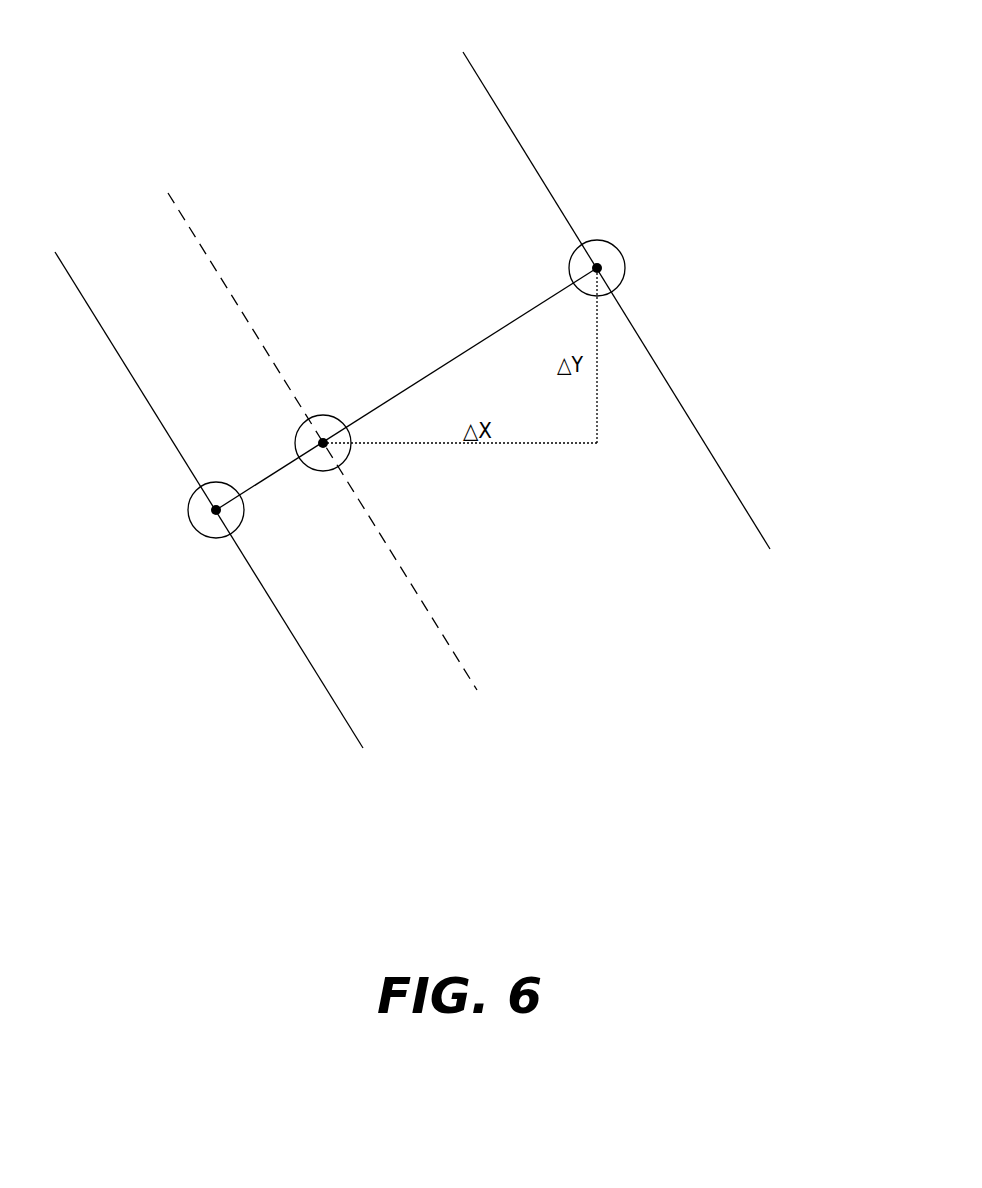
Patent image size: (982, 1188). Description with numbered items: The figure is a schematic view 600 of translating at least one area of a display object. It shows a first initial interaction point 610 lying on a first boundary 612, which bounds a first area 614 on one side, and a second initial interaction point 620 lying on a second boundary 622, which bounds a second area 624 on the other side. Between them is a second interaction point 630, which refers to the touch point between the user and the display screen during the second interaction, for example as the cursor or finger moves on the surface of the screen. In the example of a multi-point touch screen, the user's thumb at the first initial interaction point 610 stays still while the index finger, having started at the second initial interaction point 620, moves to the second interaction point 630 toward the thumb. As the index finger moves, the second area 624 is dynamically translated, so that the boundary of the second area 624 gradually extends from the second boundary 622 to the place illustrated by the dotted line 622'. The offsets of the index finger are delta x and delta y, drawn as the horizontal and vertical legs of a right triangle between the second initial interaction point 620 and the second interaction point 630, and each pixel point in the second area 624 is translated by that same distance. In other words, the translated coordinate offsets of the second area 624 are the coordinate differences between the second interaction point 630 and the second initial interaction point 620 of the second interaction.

The schematic view 600 is at (236, 103).
The first initial interaction point 610 is at (216, 510).
The first boundary 612 is at (340, 717).
The first area 614 is at (167, 692).
The second initial interaction point 620 is at (597, 268).
The second boundary 622 is at (666, 322).
The dotted line 622' is at (398, 464).
The second area 624 is at (842, 418).
The second interaction point 630 is at (323, 443).